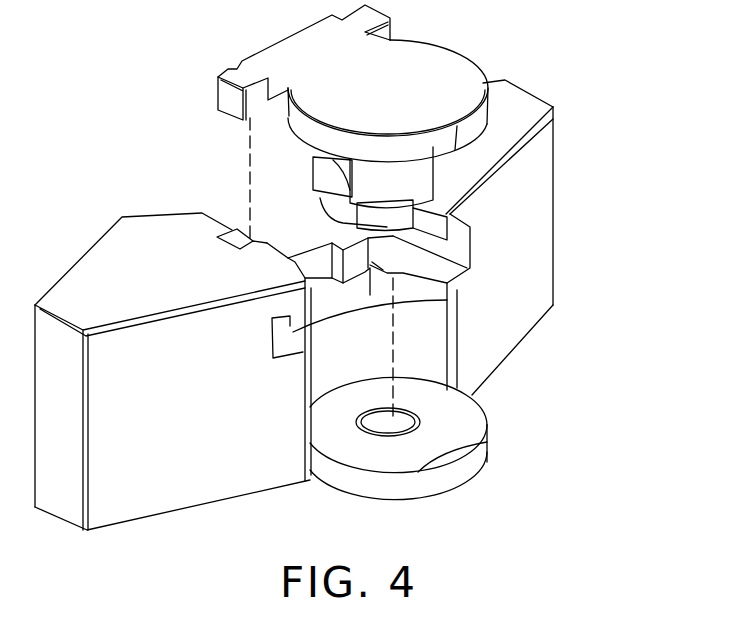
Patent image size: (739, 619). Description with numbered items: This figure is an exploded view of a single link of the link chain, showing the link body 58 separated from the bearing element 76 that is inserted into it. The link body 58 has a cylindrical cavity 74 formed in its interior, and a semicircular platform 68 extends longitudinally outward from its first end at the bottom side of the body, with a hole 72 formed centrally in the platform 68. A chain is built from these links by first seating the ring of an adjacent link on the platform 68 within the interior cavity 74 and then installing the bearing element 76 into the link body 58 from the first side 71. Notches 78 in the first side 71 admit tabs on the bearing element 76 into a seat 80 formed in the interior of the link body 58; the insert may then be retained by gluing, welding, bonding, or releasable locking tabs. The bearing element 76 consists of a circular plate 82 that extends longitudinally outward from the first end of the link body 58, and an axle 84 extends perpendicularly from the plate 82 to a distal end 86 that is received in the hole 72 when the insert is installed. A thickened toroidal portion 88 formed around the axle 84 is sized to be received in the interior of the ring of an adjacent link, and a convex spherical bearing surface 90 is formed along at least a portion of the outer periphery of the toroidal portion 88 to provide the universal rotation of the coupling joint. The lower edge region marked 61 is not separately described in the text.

The link body 58 is at (547, 177).
The lower edge of housing 61 is at (552, 275).
The platform 68 is at (427, 492).
The first side 71 is at (102, 247).
The hole 72 is at (463, 414).
The cylindrical cavity 74 is at (433, 337).
The bearing element 76 is at (268, 47).
The notches 78 is at (238, 233).
The seat 80 is at (318, 293).
The circular plate 82 is at (467, 62).
The axle 84 is at (470, 227).
The distal end 86 is at (330, 215).
The thickened toroidal portion 88 is at (528, 100).
The convex spherical bearing surface 90 is at (325, 160).